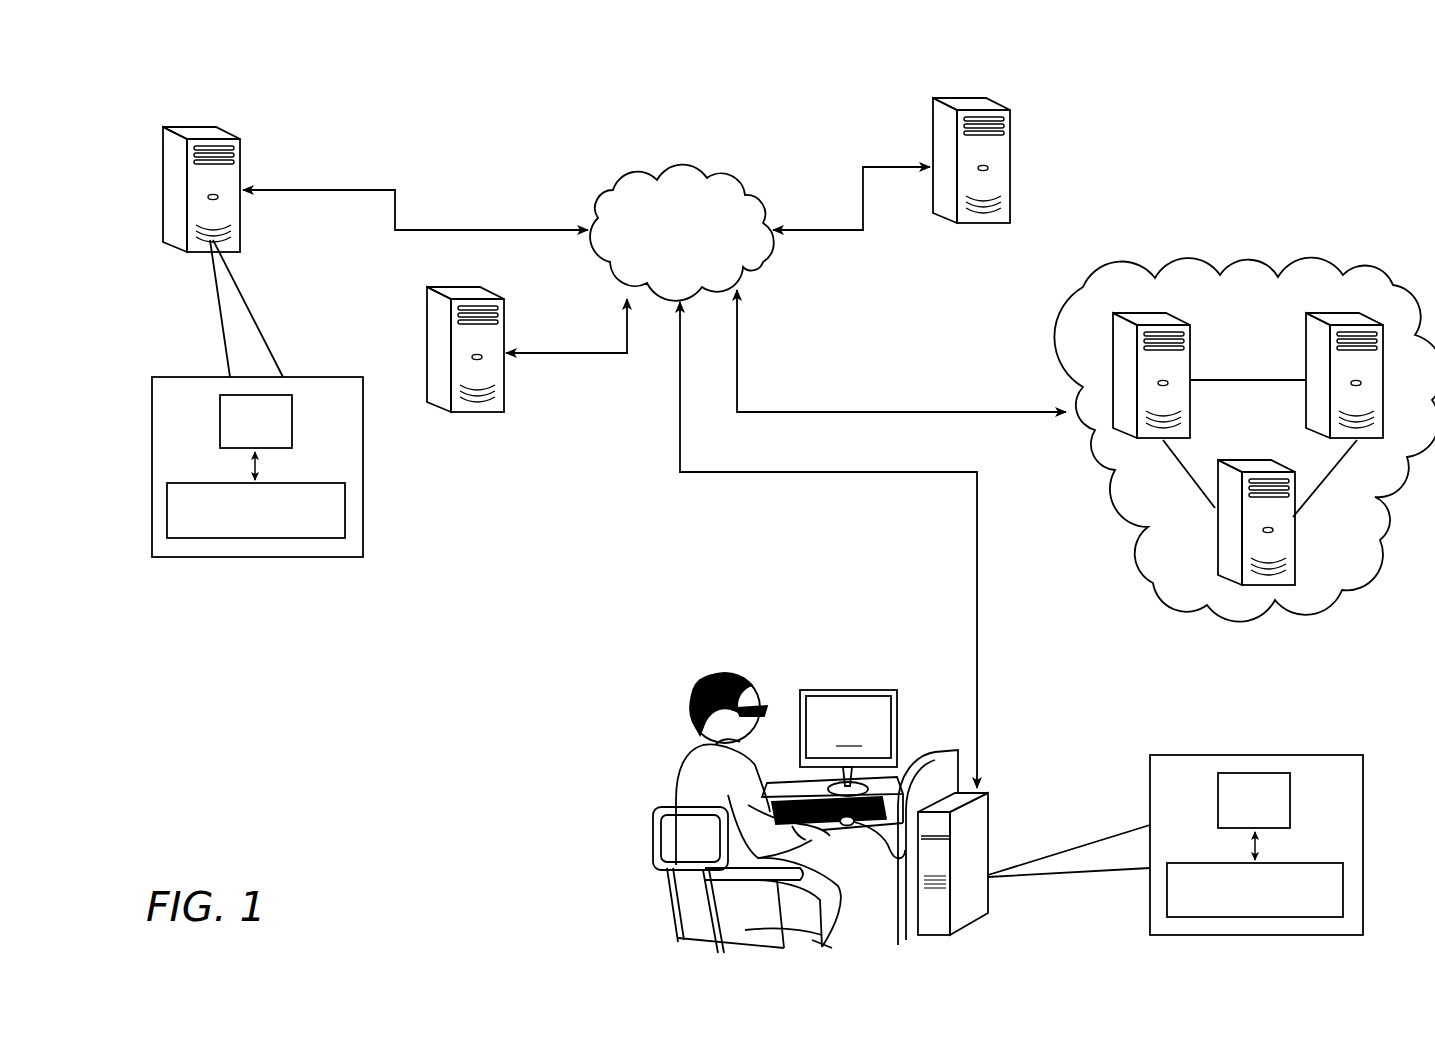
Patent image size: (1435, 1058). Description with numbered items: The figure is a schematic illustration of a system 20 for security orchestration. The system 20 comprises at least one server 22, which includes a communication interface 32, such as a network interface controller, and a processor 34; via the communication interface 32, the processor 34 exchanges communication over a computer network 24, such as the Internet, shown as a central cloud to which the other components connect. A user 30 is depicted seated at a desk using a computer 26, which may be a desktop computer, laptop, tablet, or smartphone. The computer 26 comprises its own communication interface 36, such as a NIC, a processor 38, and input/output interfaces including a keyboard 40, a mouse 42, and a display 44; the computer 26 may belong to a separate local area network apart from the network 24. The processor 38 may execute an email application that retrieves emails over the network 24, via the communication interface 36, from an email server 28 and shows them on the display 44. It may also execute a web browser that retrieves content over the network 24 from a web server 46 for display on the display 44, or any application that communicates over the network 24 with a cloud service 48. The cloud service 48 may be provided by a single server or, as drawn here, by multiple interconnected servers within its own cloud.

The system 20 is at (148, 75).
The server 22 is at (241, 235).
The computer network 24 is at (679, 163).
The computer 26 is at (990, 822).
The email server 28 is at (466, 413).
The user 30 is at (729, 677).
The communication interface 32 is at (293, 420).
The processor 34 is at (346, 512).
The communication interface 36 is at (1291, 800).
The processor 38 is at (1344, 890).
The keyboard 40 is at (796, 805).
The mouse 42 is at (846, 830).
The display 44 is at (848, 743).
The web server 46 is at (1010, 170).
The cloud service 48 is at (1305, 252).